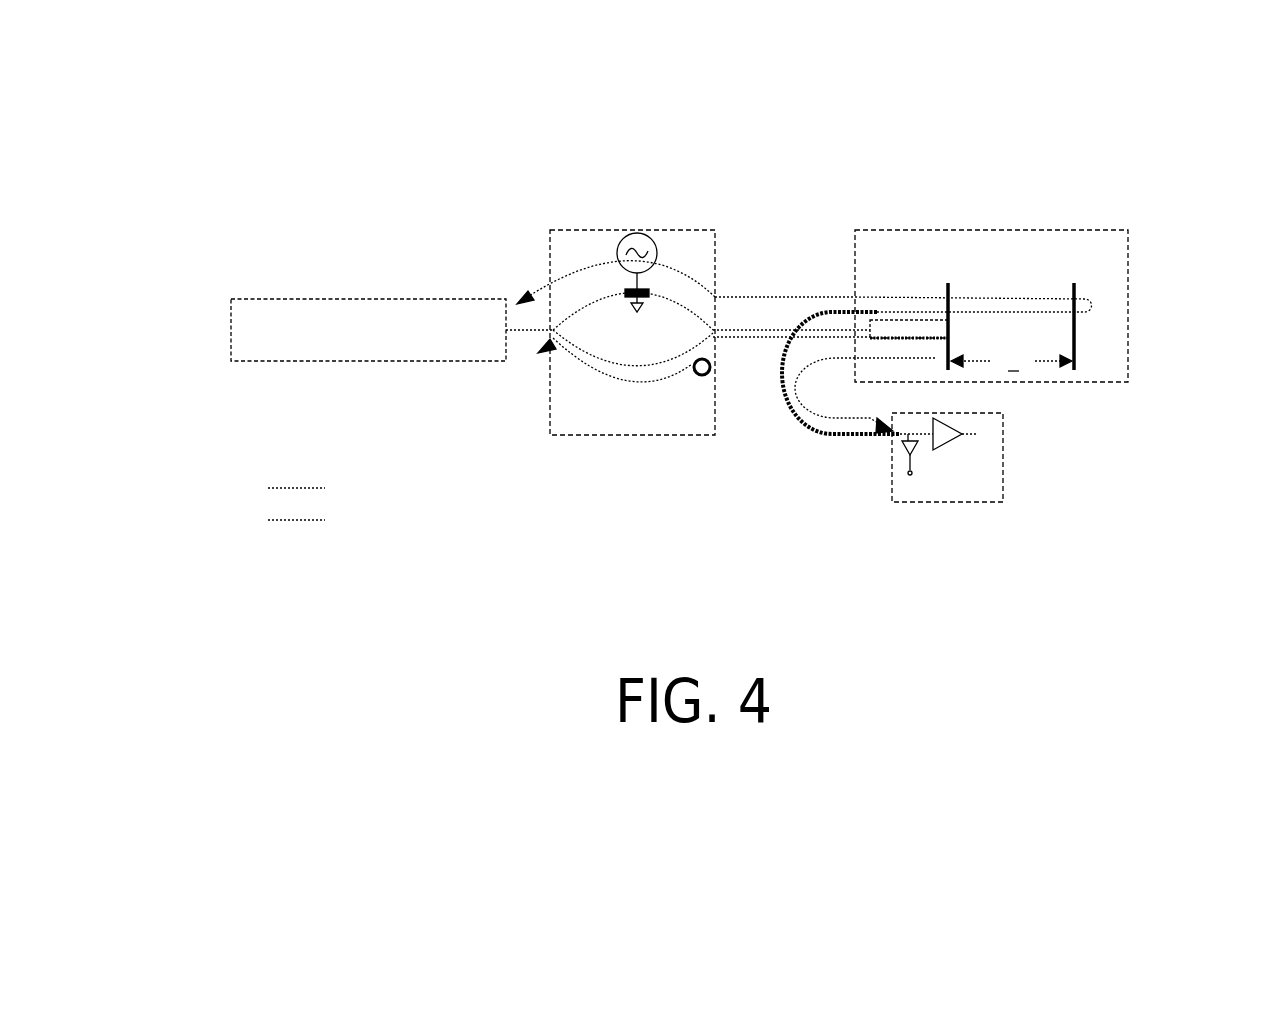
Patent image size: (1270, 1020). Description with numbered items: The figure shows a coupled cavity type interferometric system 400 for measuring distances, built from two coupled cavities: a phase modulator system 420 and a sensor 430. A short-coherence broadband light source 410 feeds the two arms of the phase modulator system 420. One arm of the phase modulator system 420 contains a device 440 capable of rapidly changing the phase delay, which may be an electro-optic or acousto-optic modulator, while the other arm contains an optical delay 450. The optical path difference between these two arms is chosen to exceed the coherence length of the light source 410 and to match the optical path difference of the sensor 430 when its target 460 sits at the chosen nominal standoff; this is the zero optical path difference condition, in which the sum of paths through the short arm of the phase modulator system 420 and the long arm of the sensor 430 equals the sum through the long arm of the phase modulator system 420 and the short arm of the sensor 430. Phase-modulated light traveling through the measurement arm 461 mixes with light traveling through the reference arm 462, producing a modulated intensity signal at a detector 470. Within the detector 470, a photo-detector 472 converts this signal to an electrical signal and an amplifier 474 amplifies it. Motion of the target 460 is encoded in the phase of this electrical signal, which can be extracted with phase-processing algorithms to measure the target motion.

The coupled cavity type interferometric system 400 is at (707, 45).
The light source 410 is at (304, 298).
The phase modulator system 420 is at (763, 313).
The sensor 430 is at (1050, 261).
The device 440 is at (660, 246).
The optical delay 450 is at (705, 375).
The target 460 is at (1068, 337).
The measurement arm 461 is at (755, 297).
The reference arm 462 is at (748, 338).
The detector 470 is at (994, 500).
The photo-detector 472 is at (916, 455).
The amplifier 474 is at (977, 440).